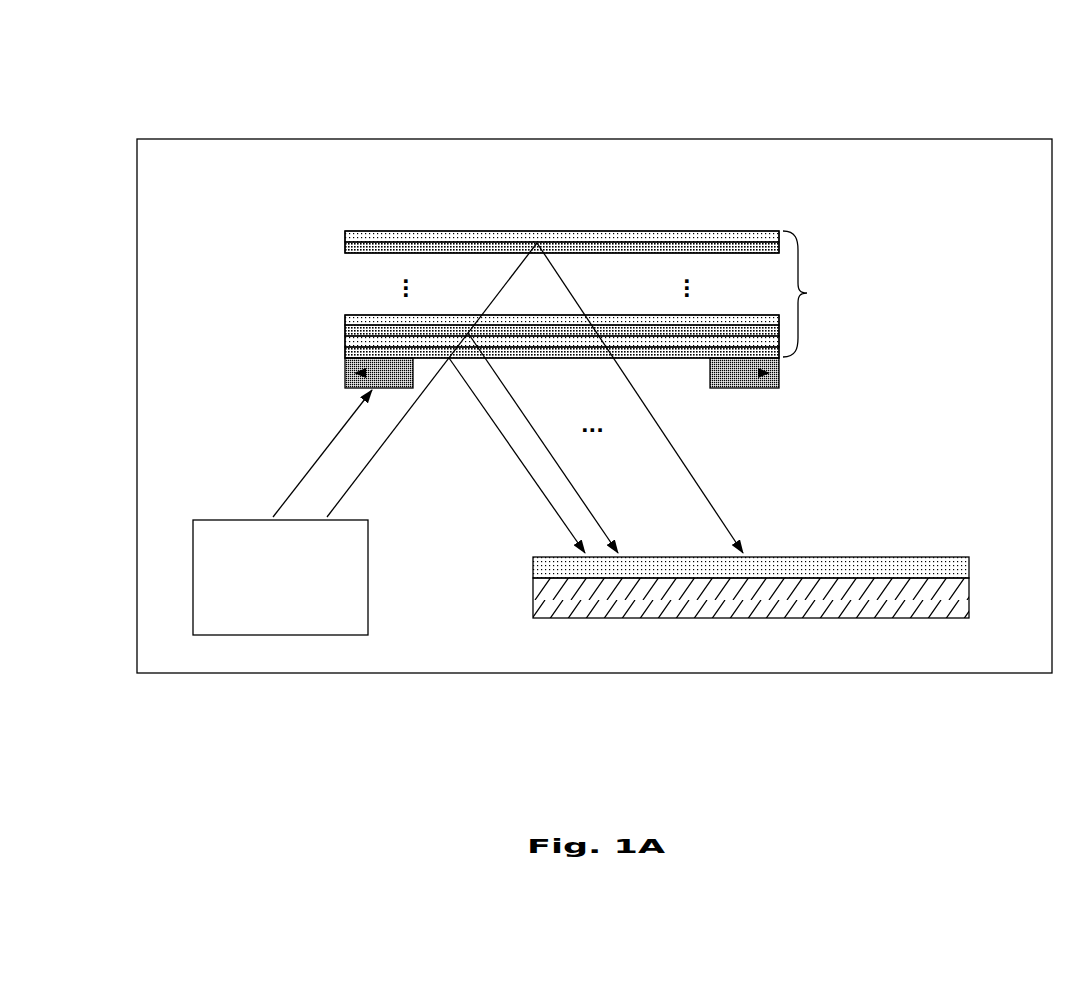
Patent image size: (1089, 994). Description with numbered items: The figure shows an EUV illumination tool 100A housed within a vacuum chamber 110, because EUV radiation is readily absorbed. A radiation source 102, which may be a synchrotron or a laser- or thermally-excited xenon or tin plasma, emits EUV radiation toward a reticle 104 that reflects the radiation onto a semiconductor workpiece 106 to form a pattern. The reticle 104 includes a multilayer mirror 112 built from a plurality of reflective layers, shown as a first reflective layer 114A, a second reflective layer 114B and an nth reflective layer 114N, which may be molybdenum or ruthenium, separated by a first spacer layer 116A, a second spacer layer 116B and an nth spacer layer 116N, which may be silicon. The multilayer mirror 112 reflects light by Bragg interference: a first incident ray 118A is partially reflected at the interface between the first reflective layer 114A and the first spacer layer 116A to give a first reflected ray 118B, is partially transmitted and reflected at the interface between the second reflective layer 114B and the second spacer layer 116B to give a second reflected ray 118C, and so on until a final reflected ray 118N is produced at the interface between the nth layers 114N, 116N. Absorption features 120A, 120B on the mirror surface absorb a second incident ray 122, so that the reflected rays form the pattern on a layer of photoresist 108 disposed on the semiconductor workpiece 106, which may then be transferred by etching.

The EUV illumination tool 100A is at (159, 48).
The vacuum chamber 110 is at (613, 384).
The reticle 104 is at (599, 262).
The multilayer mirror 112 is at (860, 304).
The nth spacer layer 116N is at (512, 212).
The nth reflective layer 114N is at (512, 237).
The second spacer layer 116B is at (512, 291).
The second reflective layer 114B is at (512, 315).
The first spacer layer 116A is at (512, 343).
The first reflective layer 114A is at (512, 371).
The absorption feature 120A is at (329, 392).
The absorption feature 120B is at (791, 382).
The radiation source 102 is at (298, 588).
The second incident ray 122 is at (297, 453).
The first incident ray 118A is at (432, 385).
The first reflected ray 118B is at (502, 455).
The second reflected ray 118C is at (543, 443).
The final reflected ray 118N is at (655, 398).
The layer of photoresist 108 is at (775, 553).
The semiconductor workpiece 106 is at (779, 608).